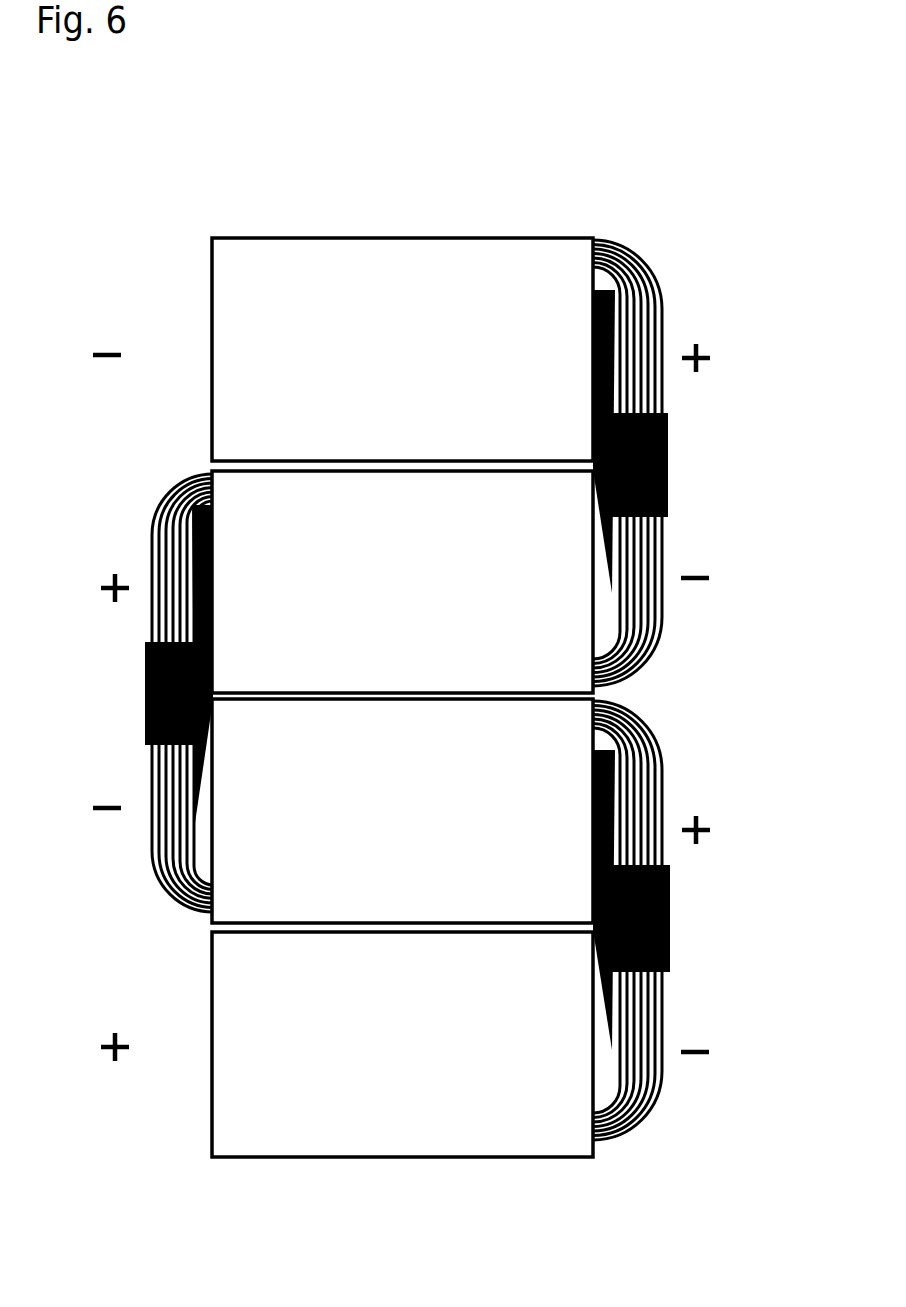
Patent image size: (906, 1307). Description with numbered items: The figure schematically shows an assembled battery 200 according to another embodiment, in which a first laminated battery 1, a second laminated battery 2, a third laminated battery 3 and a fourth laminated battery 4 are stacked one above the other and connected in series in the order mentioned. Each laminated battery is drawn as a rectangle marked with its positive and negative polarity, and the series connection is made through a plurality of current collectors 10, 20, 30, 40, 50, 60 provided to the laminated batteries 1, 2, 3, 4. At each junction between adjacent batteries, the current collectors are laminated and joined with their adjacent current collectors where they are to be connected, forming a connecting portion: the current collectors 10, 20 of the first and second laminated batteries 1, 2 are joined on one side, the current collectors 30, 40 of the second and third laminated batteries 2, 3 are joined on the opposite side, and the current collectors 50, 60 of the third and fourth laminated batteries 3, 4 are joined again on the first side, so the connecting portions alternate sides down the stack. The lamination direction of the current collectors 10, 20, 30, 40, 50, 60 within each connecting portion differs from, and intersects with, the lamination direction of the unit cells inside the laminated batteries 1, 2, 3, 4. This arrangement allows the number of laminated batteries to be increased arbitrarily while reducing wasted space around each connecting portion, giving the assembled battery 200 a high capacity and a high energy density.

The assembled battery 200 is at (380, 161).
The first laminated battery 1 is at (400, 362).
The second laminated battery 2 is at (400, 594).
The third laminated battery 3 is at (401, 829).
The fourth laminated battery 4 is at (403, 1054).
The current collector 10 is at (695, 322).
The current collector 20 is at (697, 616).
The current collector 30 is at (128, 512).
The current collector 40 is at (128, 863).
The current collector 50 is at (696, 777).
The current collector 60 is at (699, 1108).